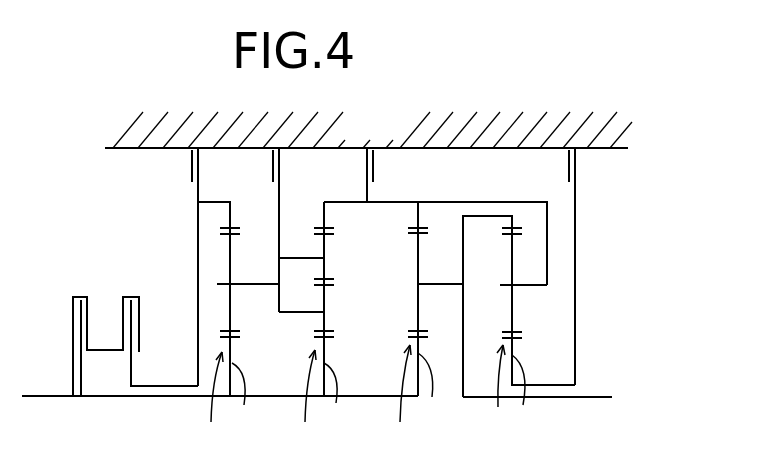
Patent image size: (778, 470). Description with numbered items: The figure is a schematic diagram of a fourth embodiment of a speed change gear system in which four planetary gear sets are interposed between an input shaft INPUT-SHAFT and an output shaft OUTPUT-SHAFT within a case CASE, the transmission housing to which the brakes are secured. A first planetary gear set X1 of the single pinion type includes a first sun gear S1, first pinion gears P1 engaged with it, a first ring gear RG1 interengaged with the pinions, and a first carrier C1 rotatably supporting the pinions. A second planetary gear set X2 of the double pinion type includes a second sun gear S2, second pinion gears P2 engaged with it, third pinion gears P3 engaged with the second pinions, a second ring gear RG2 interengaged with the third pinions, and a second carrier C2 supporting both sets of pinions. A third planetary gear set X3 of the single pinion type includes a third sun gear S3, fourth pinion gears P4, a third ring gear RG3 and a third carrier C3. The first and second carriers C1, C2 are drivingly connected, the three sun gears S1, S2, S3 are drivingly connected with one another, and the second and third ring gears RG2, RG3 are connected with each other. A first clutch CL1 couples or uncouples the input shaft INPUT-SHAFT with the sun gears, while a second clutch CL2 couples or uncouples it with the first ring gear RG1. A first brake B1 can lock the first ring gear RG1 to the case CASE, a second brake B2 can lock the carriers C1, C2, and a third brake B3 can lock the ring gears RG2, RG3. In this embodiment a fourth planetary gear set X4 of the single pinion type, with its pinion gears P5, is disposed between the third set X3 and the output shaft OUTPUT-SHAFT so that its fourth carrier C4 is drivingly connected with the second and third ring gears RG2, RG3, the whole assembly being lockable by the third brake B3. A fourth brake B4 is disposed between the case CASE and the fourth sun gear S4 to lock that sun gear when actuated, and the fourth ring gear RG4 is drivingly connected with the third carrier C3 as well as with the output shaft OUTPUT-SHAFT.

The case CASE is at (368, 130).
The first brake B1 is at (176, 267).
The second brake B2 is at (257, 230).
The third brake B3 is at (386, 175).
The fourth brake B4 is at (591, 266).
The first clutch CL1 is at (94, 330).
The second clutch CL2 is at (159, 325).
The input shaft INPUT-SHAFT is at (28, 398).
The output shaft OUTPUT-SHAFT is at (562, 398).
The first ring gear RG1 is at (230, 216).
The second ring gear RG2 is at (323, 222).
The third ring gear RG3 is at (418, 216).
The fourth ring gear RG4 is at (512, 222).
The first carrier C1 is at (253, 283).
The second carrier C2 is at (302, 259).
The third carrier C3 is at (435, 284).
The fourth carrier C4 is at (527, 286).
The first pinion gears P1 is at (227, 311).
The second pinion gears P2 is at (326, 320).
The third pinion gears P3 is at (326, 273).
The fourth pinion gears P4 is at (418, 305).
The fifth planet gear P5 is at (508, 320).
The first sun gear S1 is at (252, 400).
The second sun gear S2 is at (342, 400).
The third sun gear S3 is at (436, 396).
The fourth sun gear S4 is at (532, 397).
The first planetary gear set X1 is at (217, 404).
The second planetary gear set X2 is at (315, 403).
The third planetary gear set X3 is at (407, 402).
The fourth planetary gear set X4 is at (504, 402).